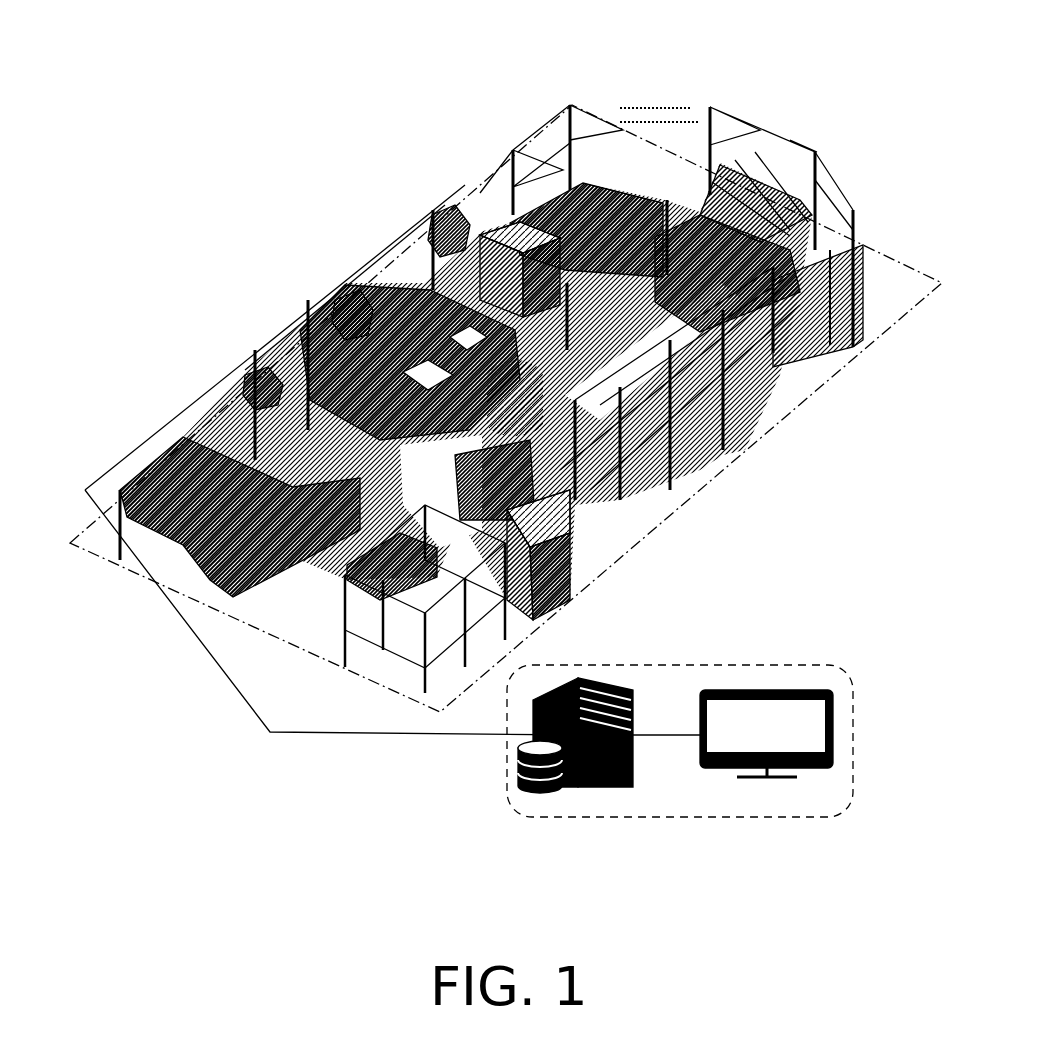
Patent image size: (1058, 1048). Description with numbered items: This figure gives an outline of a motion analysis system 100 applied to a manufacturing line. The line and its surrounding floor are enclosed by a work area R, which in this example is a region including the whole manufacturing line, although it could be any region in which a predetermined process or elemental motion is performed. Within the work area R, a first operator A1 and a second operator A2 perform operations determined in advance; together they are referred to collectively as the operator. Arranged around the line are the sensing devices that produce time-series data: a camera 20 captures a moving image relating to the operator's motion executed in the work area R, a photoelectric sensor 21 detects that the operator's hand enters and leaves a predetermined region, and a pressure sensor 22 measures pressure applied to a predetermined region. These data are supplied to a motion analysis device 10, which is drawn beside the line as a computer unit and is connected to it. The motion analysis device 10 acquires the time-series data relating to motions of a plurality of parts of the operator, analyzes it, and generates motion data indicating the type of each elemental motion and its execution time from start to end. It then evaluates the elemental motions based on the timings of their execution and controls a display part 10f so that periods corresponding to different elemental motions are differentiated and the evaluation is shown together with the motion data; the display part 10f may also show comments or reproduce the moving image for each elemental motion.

The motion analysis system 100 is at (798, 103).
The motion analysis device 10 is at (708, 818).
The display part 10f is at (768, 693).
The camera 20 is at (447, 240).
The photoelectric sensor 21 is at (183, 427).
The pressure sensor 22 is at (128, 467).
The work area R is at (847, 370).
The first operator A1 is at (556, 560).
The second operator A2 is at (640, 445).